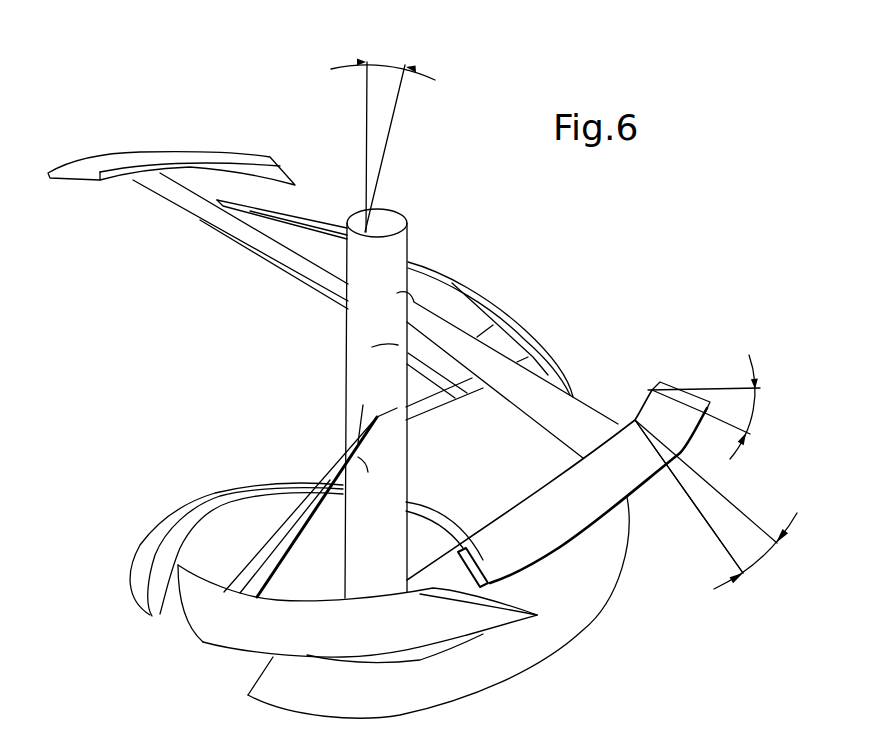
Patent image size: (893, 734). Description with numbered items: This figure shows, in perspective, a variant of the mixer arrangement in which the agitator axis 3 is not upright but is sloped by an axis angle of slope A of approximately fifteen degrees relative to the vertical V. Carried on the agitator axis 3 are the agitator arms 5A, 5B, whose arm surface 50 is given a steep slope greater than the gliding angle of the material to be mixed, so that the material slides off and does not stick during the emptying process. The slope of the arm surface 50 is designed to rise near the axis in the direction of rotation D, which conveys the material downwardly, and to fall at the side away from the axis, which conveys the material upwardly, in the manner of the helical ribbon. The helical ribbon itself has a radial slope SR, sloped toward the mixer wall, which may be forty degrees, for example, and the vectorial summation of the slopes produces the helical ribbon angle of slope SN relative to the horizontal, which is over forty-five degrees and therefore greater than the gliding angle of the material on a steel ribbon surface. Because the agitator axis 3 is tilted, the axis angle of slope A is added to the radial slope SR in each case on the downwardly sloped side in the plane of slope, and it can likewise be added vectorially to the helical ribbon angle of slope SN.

The agitator axis 3 is at (388, 265).
The arm surface 50 is at (420, 350).
The agitator arm 5A is at (510, 405).
The agitator arm 5B is at (322, 476).
The direction of rotation D is at (680, 388).
The axis angle of slope A is at (390, 62).
The vertical V is at (366, 130).
The radial slope SR is at (753, 408).
The helical ribbon angle of slope SN is at (701, 511).